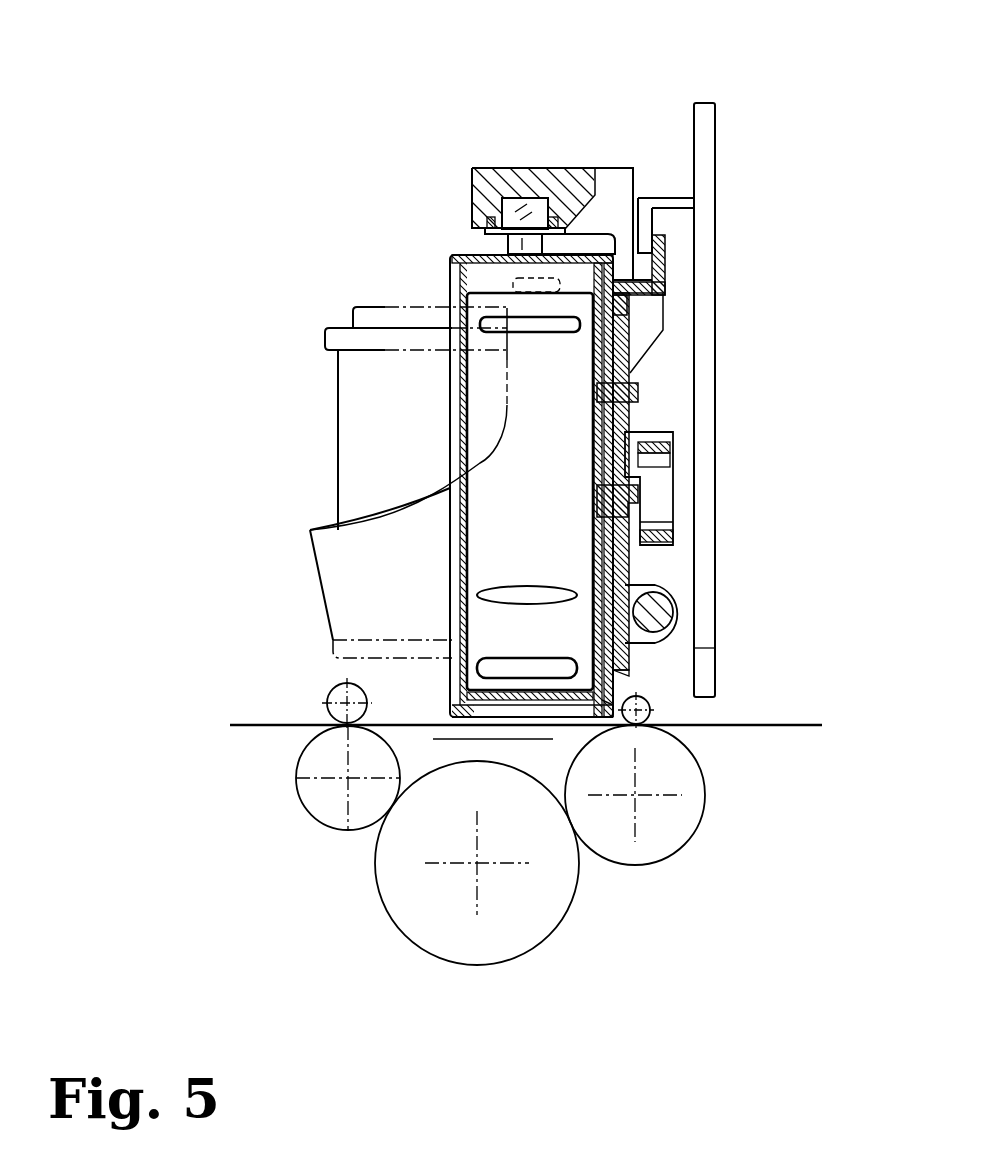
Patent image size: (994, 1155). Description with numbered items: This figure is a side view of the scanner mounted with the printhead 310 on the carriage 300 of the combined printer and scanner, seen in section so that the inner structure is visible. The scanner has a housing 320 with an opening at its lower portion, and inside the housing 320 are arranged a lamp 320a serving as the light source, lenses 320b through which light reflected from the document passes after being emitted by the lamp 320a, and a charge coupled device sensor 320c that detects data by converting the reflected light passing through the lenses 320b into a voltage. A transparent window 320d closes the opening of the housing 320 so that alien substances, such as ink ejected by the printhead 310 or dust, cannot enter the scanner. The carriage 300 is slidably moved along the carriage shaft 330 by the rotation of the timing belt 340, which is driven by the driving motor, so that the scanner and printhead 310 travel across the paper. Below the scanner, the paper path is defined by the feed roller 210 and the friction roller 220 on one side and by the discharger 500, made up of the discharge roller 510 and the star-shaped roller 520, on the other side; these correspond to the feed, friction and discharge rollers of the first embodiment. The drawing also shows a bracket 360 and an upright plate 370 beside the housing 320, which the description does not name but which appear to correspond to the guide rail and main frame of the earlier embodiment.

The feed roller 210 is at (697, 795).
The friction roller 220 is at (644, 698).
The carriage 300 is at (285, 554).
The printhead 310 is at (325, 380).
The scanner housing 320 is at (440, 228).
The lamp 320a is at (497, 660).
The lenses 320b is at (553, 585).
The charge coupled device sensor 320c is at (495, 320).
The transparent window 320d is at (571, 737).
The carriage shaft 330 is at (665, 585).
The timing belt 340 is at (660, 433).
The mounting bracket 360 is at (671, 195).
The frame plate 370 is at (716, 203).
The discharger 500 is at (283, 758).
The discharge roller 510 is at (312, 797).
The star-shaped roller 520 is at (327, 690).